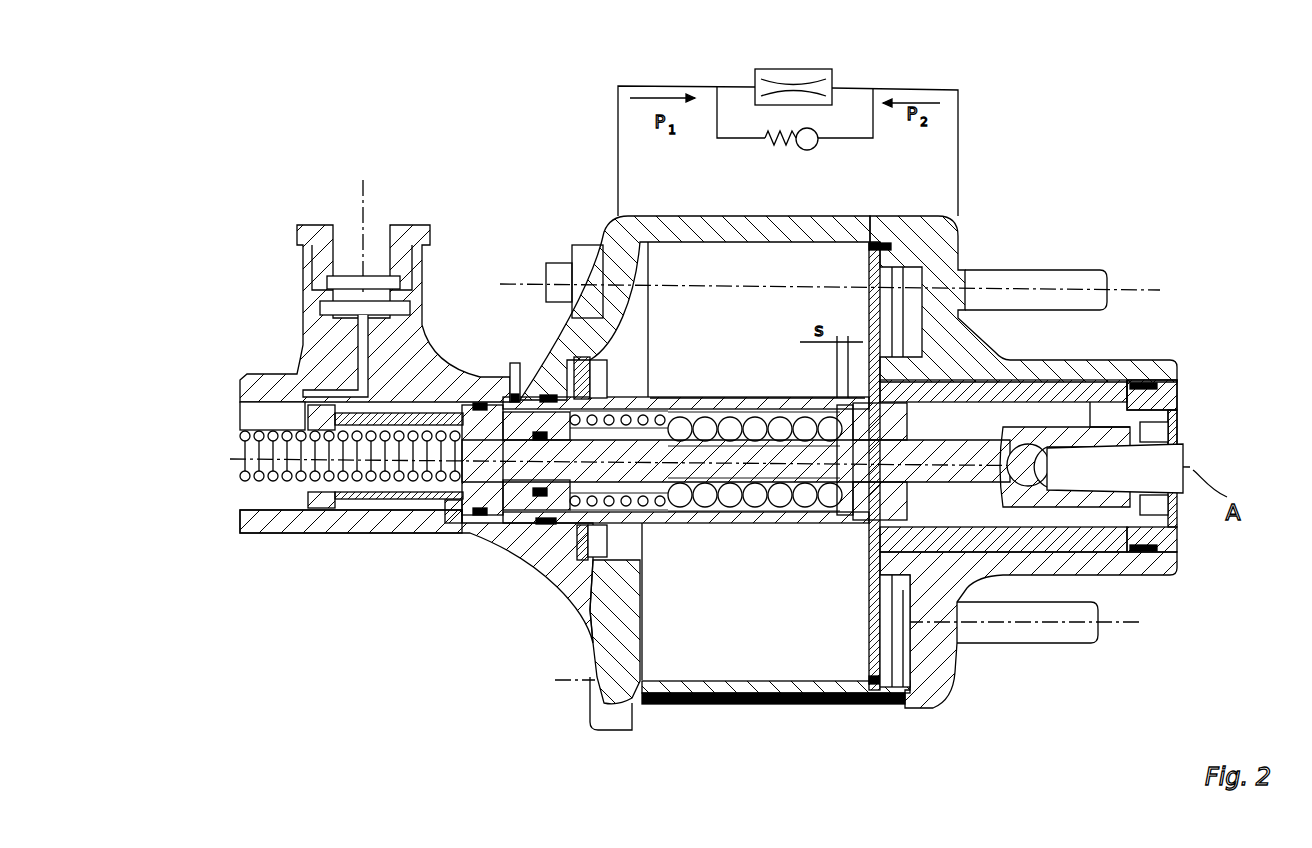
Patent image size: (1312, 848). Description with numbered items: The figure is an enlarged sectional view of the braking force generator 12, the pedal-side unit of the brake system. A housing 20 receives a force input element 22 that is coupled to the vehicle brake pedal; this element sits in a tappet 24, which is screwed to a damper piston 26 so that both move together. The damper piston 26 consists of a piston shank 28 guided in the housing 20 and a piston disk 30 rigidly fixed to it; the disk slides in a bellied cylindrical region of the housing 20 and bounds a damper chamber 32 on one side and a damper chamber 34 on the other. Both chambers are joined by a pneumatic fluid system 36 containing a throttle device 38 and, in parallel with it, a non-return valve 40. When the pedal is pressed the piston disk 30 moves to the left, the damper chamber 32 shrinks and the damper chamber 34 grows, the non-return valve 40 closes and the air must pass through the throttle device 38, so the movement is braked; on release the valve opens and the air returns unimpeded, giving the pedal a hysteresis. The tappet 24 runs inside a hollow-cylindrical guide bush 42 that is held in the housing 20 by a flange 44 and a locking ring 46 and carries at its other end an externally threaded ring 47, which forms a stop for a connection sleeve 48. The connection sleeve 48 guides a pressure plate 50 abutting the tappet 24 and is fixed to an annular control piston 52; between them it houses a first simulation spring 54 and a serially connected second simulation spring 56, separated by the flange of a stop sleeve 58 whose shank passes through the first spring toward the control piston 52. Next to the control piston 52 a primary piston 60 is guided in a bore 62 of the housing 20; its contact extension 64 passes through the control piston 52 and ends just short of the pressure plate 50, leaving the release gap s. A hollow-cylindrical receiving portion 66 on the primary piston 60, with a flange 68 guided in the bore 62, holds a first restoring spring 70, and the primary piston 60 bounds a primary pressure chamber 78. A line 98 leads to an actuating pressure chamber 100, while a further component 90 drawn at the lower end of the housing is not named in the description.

The actuator 12 is at (1040, 173).
The housing 20 is at (268, 530).
The force input element 22 is at (1173, 461).
The tappet 24 is at (1100, 392).
The damper piston 26 is at (1085, 560).
The piston shank 28 is at (1045, 550).
The piston disk 30 is at (866, 648).
The damper chamber 32 is at (620, 222).
The damper chamber 34 is at (913, 280).
The pneumatic fluid system 36 is at (622, 86).
The throttle device 38 is at (800, 70).
The non-return valve 40 is at (817, 136).
The guide bush 42 is at (707, 527).
The flange 44 is at (583, 517).
The locking ring 46 is at (585, 558).
The externally threaded ring 47 is at (967, 607).
The connection sleeve 48 is at (743, 527).
The pressure plate 50 is at (847, 527).
The control piston 52 is at (520, 515).
The first simulation spring 54 is at (574, 395).
The second simulation spring 56 is at (777, 397).
The stop sleeve 58 is at (615, 585).
The primary piston 60 is at (455, 522).
The bore 62 is at (240, 533).
The contact extension 64 is at (740, 397).
The receiving portion 66 is at (365, 499).
The flange 68 is at (320, 508).
The first restoring spring 70 is at (255, 495).
The primary pressure chamber 78 is at (253, 417).
The end plate 90 is at (893, 708).
The line 98 is at (512, 375).
The actuating pressure chamber 100 is at (488, 520).